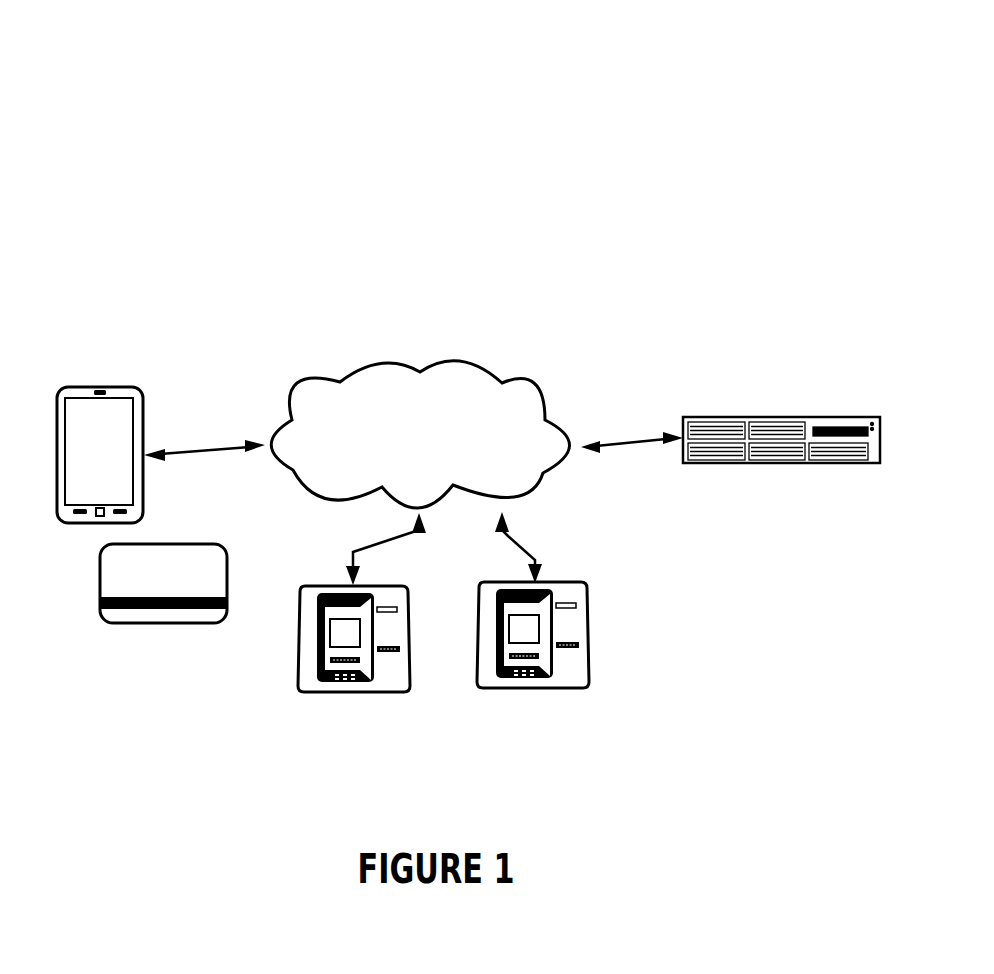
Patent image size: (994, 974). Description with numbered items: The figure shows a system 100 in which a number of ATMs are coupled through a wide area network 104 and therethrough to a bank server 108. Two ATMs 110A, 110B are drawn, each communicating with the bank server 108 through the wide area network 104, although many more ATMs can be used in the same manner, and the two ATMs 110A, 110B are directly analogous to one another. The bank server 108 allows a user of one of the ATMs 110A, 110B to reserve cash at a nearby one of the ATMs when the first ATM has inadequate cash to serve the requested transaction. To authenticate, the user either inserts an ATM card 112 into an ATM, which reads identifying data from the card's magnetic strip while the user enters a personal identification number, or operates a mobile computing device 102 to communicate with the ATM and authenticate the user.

The system 100 is at (98, 96).
The mobile computing device 102 is at (97, 386).
The wide area network 104 is at (420, 434).
The bank server 108 is at (782, 416).
The ATM 110A is at (352, 693).
The ATM 110B is at (533, 688).
The ATM card 112 is at (163, 624).